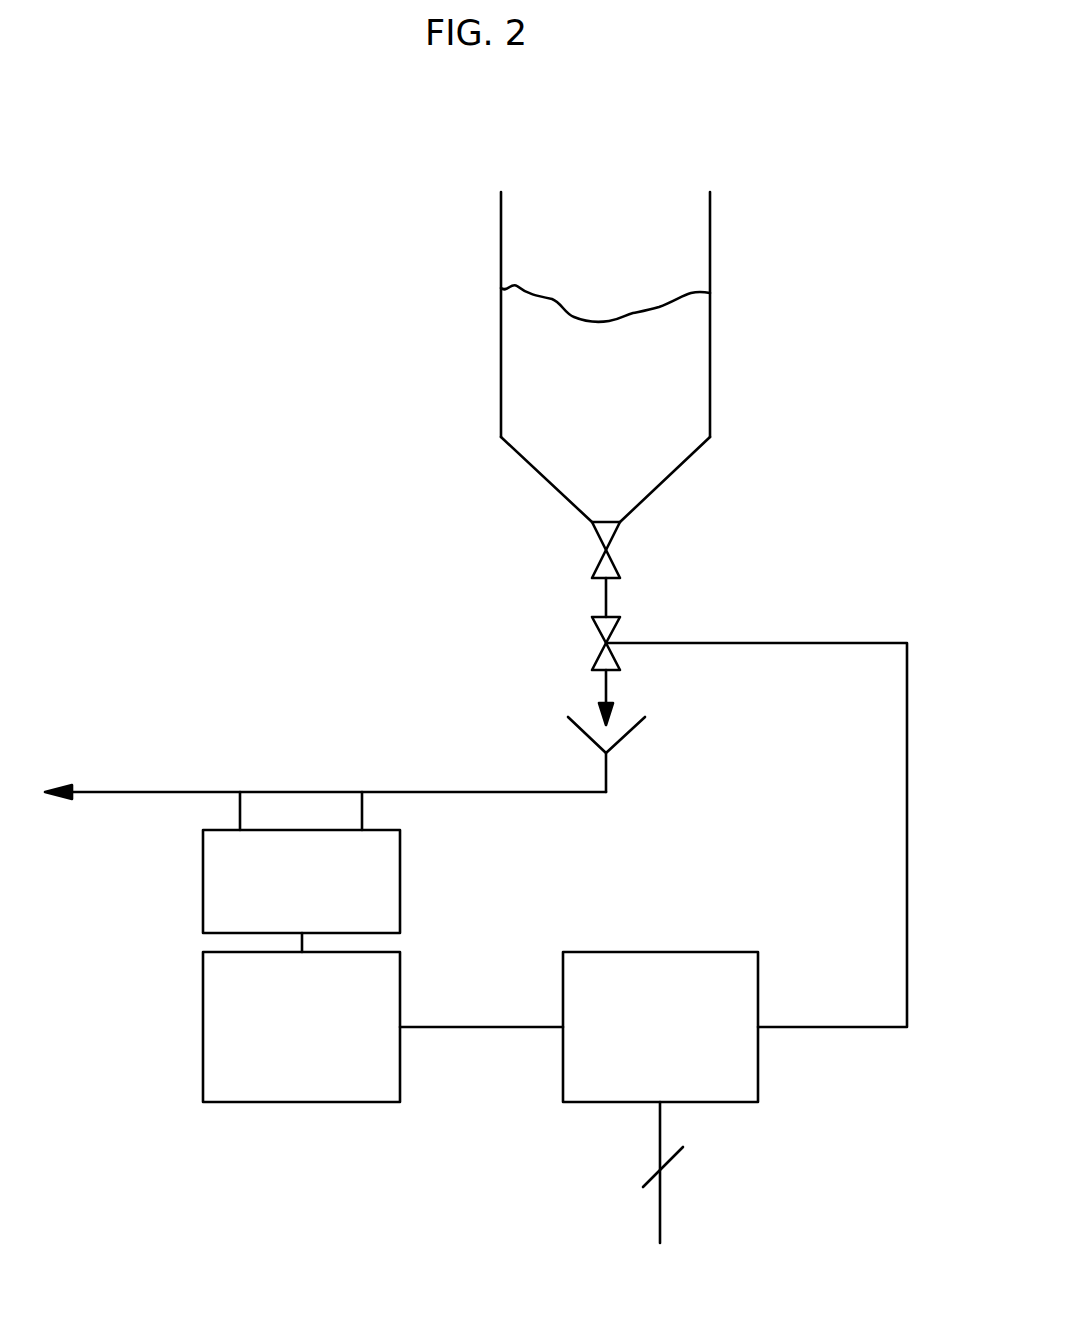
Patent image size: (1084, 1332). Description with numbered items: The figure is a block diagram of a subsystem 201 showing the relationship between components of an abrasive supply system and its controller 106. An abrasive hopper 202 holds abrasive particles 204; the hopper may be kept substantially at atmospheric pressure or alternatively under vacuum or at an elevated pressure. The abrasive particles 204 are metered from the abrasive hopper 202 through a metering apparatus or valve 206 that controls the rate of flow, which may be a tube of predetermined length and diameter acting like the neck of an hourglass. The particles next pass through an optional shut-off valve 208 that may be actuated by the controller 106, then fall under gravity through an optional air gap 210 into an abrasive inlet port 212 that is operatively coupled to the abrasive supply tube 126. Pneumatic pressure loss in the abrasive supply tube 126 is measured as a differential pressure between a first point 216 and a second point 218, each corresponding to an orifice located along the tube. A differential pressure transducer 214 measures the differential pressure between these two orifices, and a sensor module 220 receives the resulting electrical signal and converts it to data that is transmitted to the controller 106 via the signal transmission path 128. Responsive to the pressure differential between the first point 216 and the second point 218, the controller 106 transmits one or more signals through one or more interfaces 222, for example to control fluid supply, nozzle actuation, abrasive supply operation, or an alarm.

The subsystem 201 is at (876, 372).
The abrasive hopper 202 is at (497, 398).
The abrasive particles 204 is at (682, 346).
The metering apparatus or valve 206 is at (604, 550).
The shut-off valve 208 is at (604, 644).
The air gap 210 is at (643, 696).
The abrasive inlet port 212 is at (637, 726).
The abrasive supply tube 126 is at (155, 792).
The second point 218 is at (240, 792).
The first point 216 is at (362, 792).
The differential pressure transducer 214 is at (401, 878).
The sensor module 220 is at (301, 1027).
The signal transmission path 128 is at (497, 1028).
The controller 106 is at (660, 1027).
The interfaces 222 is at (662, 1186).